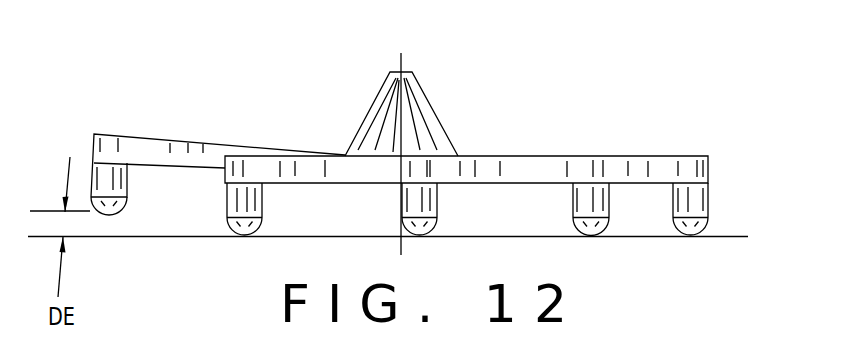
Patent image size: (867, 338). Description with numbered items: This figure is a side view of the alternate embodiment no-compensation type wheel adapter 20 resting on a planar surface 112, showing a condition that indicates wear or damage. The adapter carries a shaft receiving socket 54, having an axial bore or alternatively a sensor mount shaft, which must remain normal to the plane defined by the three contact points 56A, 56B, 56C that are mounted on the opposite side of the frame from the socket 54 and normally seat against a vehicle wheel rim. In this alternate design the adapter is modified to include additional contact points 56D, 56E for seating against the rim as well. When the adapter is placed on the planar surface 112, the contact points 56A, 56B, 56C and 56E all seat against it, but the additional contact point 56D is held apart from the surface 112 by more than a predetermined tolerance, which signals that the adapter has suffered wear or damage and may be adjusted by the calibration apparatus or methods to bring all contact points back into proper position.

The no-compensation type wheel adapter 20 is at (568, 66).
The shaft receiving socket 54 is at (409, 72).
The contact point 56A is at (240, 197).
The contact point 56B is at (598, 200).
The contact point 56C is at (423, 200).
The additional contact point 56D is at (117, 181).
The additional contact point 56E is at (695, 203).
The planar surface 112 is at (203, 237).